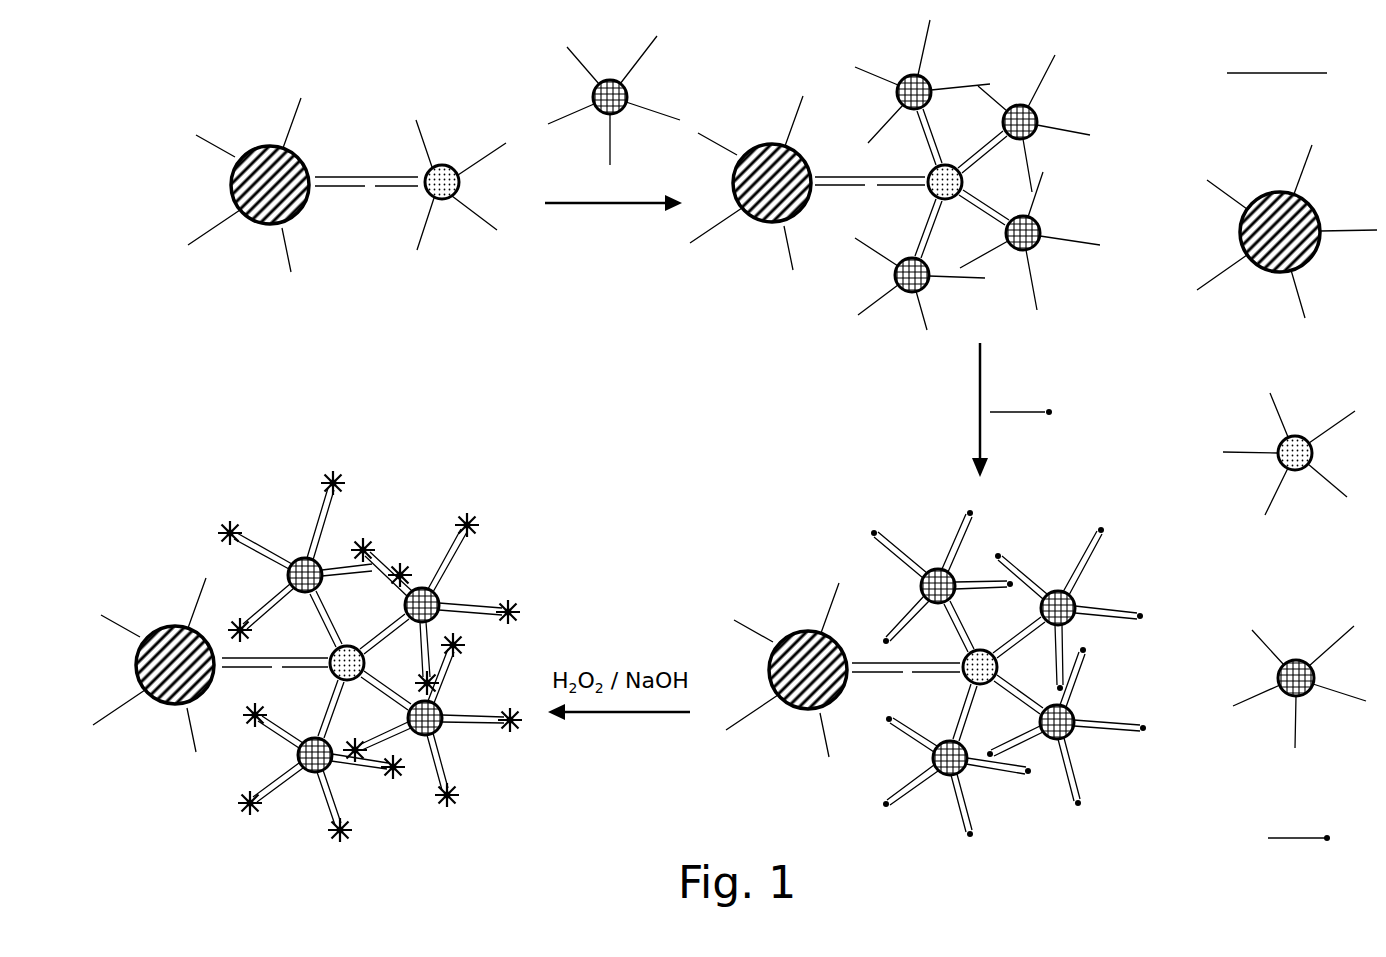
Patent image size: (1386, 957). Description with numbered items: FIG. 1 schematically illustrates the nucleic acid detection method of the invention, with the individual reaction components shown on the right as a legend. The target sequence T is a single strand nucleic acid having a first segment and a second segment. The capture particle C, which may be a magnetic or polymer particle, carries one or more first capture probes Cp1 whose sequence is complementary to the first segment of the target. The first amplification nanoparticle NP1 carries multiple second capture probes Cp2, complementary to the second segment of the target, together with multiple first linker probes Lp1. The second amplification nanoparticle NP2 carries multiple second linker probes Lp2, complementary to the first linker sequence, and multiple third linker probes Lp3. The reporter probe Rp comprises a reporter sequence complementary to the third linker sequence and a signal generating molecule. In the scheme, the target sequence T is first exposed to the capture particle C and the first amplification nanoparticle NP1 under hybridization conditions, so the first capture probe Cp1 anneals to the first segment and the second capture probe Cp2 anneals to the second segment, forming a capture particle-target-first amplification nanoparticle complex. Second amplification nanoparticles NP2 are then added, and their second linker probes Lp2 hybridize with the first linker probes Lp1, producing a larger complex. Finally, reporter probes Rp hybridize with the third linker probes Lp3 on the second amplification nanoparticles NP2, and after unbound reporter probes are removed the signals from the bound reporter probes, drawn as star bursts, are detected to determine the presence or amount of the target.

The target sequence T is at (1277, 57).
The capture particle C is at (1287, 249).
The first capture probe Cp1 is at (1324, 167).
The first amplification nanoparticle NP1 is at (1310, 454).
The second capture probe Cp2 is at (1241, 469).
The first linker probe Lp1 is at (1326, 491).
The second amplification nanoparticle NP2 is at (1303, 677).
The second linker probe Lp2 is at (1246, 692).
The third linker probe Lp3 is at (1340, 707).
The reporter probe Rp is at (1299, 858).